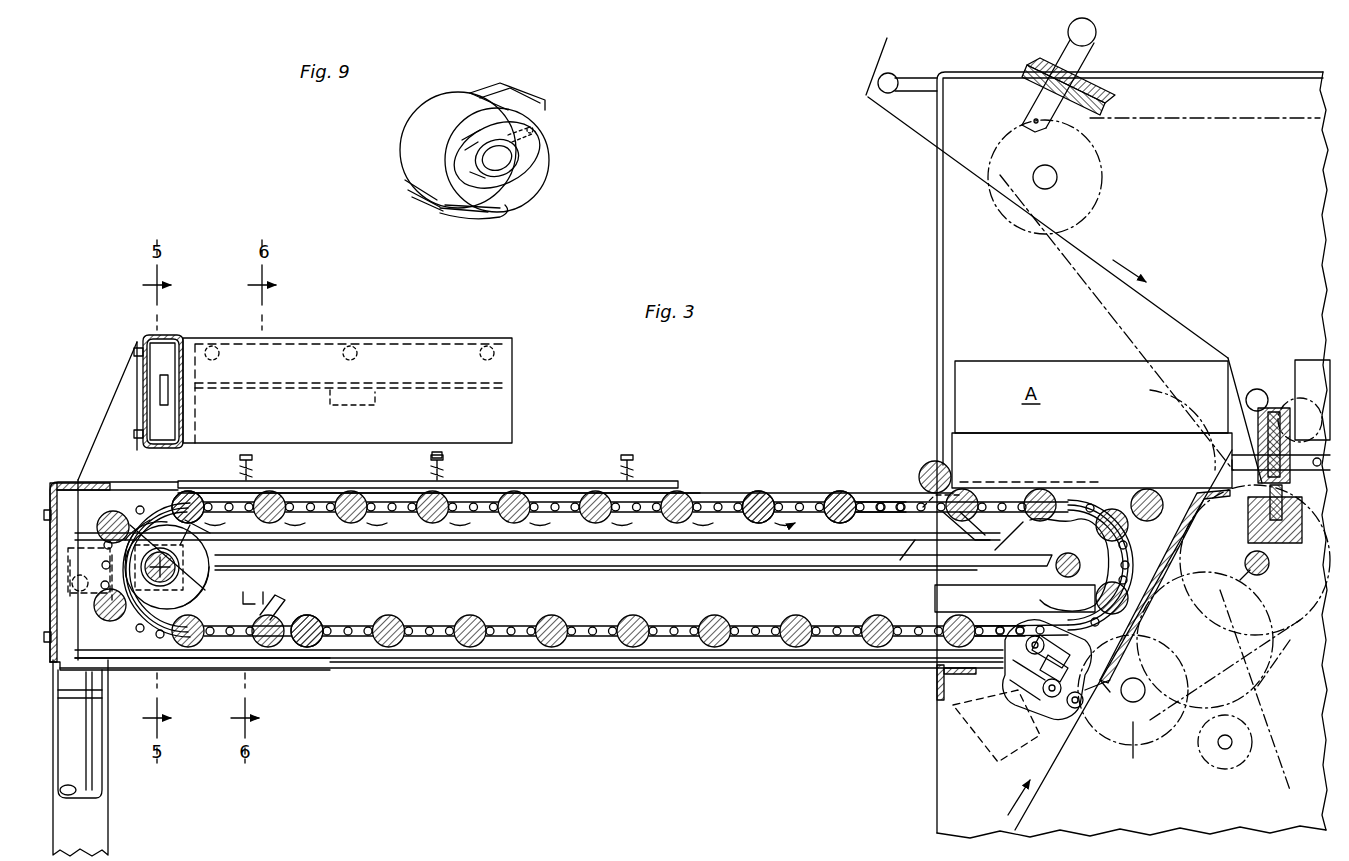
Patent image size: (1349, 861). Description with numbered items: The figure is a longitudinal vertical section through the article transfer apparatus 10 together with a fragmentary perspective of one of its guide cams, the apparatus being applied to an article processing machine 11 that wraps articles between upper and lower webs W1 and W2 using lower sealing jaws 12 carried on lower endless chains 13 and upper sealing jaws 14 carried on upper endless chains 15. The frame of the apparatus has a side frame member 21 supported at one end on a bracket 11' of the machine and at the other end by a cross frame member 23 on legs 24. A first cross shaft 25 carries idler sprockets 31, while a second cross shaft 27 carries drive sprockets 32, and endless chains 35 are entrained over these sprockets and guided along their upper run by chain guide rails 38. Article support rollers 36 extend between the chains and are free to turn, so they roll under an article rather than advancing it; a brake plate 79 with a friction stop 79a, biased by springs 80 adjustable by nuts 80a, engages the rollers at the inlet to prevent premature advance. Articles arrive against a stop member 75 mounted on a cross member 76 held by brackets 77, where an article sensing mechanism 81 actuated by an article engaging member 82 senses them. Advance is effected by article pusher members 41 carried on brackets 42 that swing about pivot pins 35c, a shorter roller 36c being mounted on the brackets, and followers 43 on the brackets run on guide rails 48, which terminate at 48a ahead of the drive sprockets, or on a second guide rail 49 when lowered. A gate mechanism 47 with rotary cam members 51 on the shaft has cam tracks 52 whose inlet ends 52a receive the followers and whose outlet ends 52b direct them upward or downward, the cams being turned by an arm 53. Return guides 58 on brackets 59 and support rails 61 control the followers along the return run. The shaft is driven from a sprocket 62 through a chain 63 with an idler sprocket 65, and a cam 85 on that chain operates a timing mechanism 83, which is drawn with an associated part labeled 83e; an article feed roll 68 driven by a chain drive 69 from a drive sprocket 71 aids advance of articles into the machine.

In FIG. 3, the article transfer apparatus 10 is at (749, 464).
In FIG. 3, the article processing machine 11 is at (1087, 455).
In FIG. 3, the bracket 11' is at (920, 687).
In FIG. 3, the lower sealing jaws 12 is at (1277, 545).
In FIG. 3, the lower endless chains 13 is at (1290, 655).
In FIG. 3, the upper sealing jaws 14 is at (1278, 405).
In FIG. 3, the upper endless chains 15 is at (1065, 285).
In FIG. 3, the side frame member 21 is at (508, 615).
In FIG. 3, the cross frame member 23 is at (50, 562).
In FIG. 3, the legs 24 is at (98, 815).
In FIG. 3, the first cross shaft 25 is at (212, 580).
In FIG. 3, the second cross shaft 27 is at (1066, 578).
In FIG. 3, the idler sprockets 31 is at (218, 625).
In FIG. 3, the drive sprockets 32 is at (1045, 544).
In FIG. 3, the endless chains 35 is at (745, 640).
In FIG. 3, the pivot pins 35c is at (1000, 530).
In FIG. 3, the article support rollers 36 is at (830, 490).
In FIG. 3, the roller 36c is at (970, 490).
In FIG. 3, the chain guide rails 38 is at (707, 500).
In FIG. 3, the article pusher members 41 is at (930, 475).
In FIG. 3, the brackets 42 is at (910, 500).
In FIG. 3, the followers 43 is at (920, 530).
In FIG. 9, the gate mechanism 47 is at (403, 149).
In FIG. 3, the gate mechanism 47 is at (148, 512).
In FIG. 3, the guide rails 48 is at (466, 525).
In FIG. 3, the termination of upper rail 48a is at (918, 545).
In FIG. 3, the second guide rail 49 is at (525, 553).
In FIG. 9, the rotary cam members 51 is at (495, 216).
In FIG. 9, the cam tracks 52 is at (453, 185).
In FIG. 3, the cam tracks 52 is at (128, 560).
In FIG. 3, the inlet ends 52a is at (172, 600).
In FIG. 3, the outlet ends 52b is at (178, 520).
In FIG. 3, the arm 53 is at (48, 540).
In FIG. 3, the return guides 58 is at (1130, 575).
In FIG. 3, the brackets 59 is at (965, 608).
In FIG. 3, the support rails 61 is at (575, 655).
In FIG. 3, the sprocket 62 is at (1270, 688).
In FIG. 3, the chain 63 is at (1182, 475).
In FIG. 3, the idler sprocket 65 is at (1133, 707).
In FIG. 3, the article feed roll 68 is at (1137, 492).
In FIG. 3, the chain drive 69 is at (1255, 735).
In FIG. 3, the drive sprocket 71 is at (1245, 615).
In FIG. 3, the stop member 75 is at (437, 341).
In FIG. 3, the cross member 76 is at (158, 345).
In FIG. 3, the brackets 77 is at (122, 385).
In FIG. 3, the brake plate 79 is at (514, 481).
In FIG. 3, the friction stop 79a is at (310, 490).
In FIG. 3, the springs 80 is at (441, 468).
In FIG. 3, the nuts 80a is at (441, 455).
In FIG. 3, the article sensing mechanism 81 is at (377, 400).
In FIG. 3, the article engaging member 82 is at (500, 400).
In FIG. 3, the timing mechanism 83 is at (1032, 700).
In FIG. 3, the mounting plate 83e is at (1040, 715).
In FIG. 3, the cam 85 is at (1065, 660).
In FIG. 3, the upper web W1 is at (962, 160).
In FIG. 3, the lower web W2 is at (1055, 760).